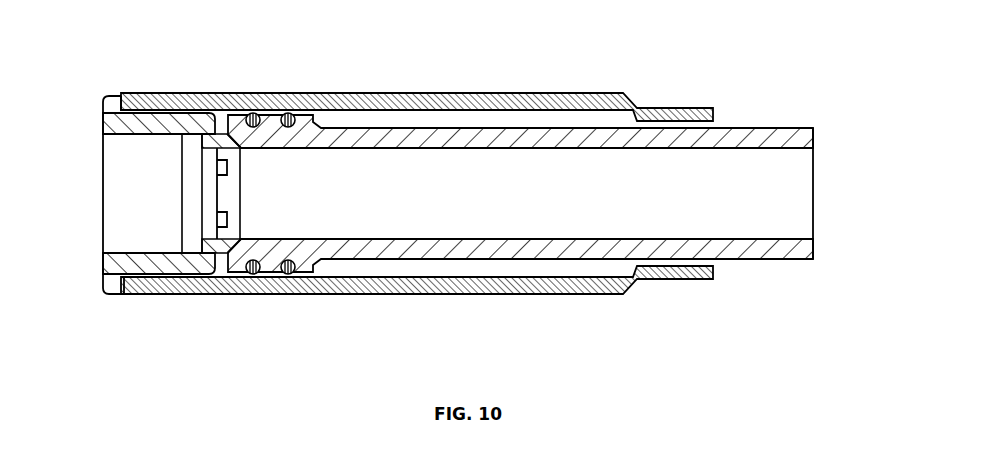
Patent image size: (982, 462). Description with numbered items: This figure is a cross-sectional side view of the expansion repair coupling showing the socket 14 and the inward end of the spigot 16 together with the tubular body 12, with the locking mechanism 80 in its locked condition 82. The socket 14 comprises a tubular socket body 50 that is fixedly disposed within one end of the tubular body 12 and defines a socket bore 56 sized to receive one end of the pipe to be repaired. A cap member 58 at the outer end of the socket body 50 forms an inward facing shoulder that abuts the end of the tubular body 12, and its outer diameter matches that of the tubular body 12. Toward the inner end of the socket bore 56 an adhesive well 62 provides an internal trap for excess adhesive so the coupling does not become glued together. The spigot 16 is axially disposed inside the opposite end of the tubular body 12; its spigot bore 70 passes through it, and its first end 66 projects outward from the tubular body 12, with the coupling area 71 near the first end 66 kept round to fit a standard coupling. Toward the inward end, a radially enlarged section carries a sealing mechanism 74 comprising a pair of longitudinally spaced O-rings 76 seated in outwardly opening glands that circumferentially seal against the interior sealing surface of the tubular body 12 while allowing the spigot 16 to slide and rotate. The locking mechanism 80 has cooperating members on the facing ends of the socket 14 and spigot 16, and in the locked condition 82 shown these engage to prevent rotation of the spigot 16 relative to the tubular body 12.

The tubular body 12 is at (519, 91).
The socket 14 is at (138, 276).
The spigot 16 is at (748, 124).
The socket body 50 is at (158, 120).
The socket bore 56 is at (140, 195).
The cap member 58 is at (110, 105).
The adhesive well 62 is at (191, 254).
The first end 66 is at (805, 124).
The spigot bore 70 is at (767, 205).
The coupling area 71 is at (768, 262).
The sealing mechanism 74 is at (297, 113).
The O-ring 76 is at (292, 278).
The locking mechanism 80 is at (222, 187).
The locked condition 82 is at (232, 303).